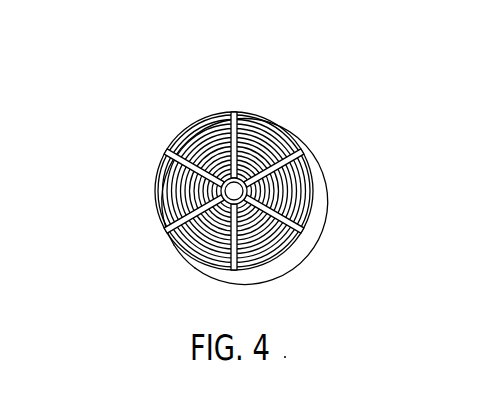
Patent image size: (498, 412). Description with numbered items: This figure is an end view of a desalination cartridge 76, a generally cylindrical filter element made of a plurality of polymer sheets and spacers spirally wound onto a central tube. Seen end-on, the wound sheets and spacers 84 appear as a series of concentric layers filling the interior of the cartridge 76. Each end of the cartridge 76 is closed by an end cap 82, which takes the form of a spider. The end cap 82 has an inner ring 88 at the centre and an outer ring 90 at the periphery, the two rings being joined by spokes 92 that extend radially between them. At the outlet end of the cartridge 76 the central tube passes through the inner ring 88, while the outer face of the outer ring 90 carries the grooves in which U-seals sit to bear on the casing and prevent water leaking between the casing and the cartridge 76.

The cartridge 76 is at (234, 89).
The end cap 82 is at (195, 266).
The wound sheets and spacers 84 is at (163, 208).
The inner ring 88 is at (297, 206).
The outer ring 90 is at (181, 131).
The spokes 92 is at (187, 173).